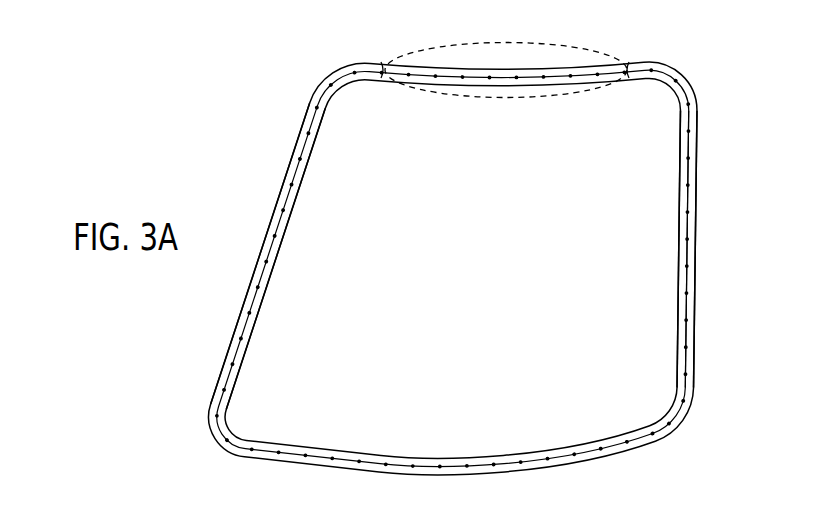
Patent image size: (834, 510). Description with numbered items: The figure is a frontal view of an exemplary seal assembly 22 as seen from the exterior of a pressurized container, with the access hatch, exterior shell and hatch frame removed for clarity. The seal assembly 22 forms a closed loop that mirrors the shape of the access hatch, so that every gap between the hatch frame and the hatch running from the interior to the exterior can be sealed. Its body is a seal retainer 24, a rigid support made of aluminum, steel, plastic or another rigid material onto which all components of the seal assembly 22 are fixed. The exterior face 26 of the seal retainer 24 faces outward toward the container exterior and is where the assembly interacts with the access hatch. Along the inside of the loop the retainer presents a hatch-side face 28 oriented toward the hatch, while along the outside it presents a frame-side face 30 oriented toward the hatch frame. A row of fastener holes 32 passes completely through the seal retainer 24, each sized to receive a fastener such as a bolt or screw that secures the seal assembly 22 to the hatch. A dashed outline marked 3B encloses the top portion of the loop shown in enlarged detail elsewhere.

The seal assembly 22 is at (758, 118).
The seal retainer 24 is at (289, 216).
The exterior face 26 is at (696, 252).
The hatch-side face 28 is at (680, 309).
The frame-side face 30 is at (292, 157).
The fastener holes 32 is at (688, 210).
The detail region shown in FIG. 3B is at (390, 57).